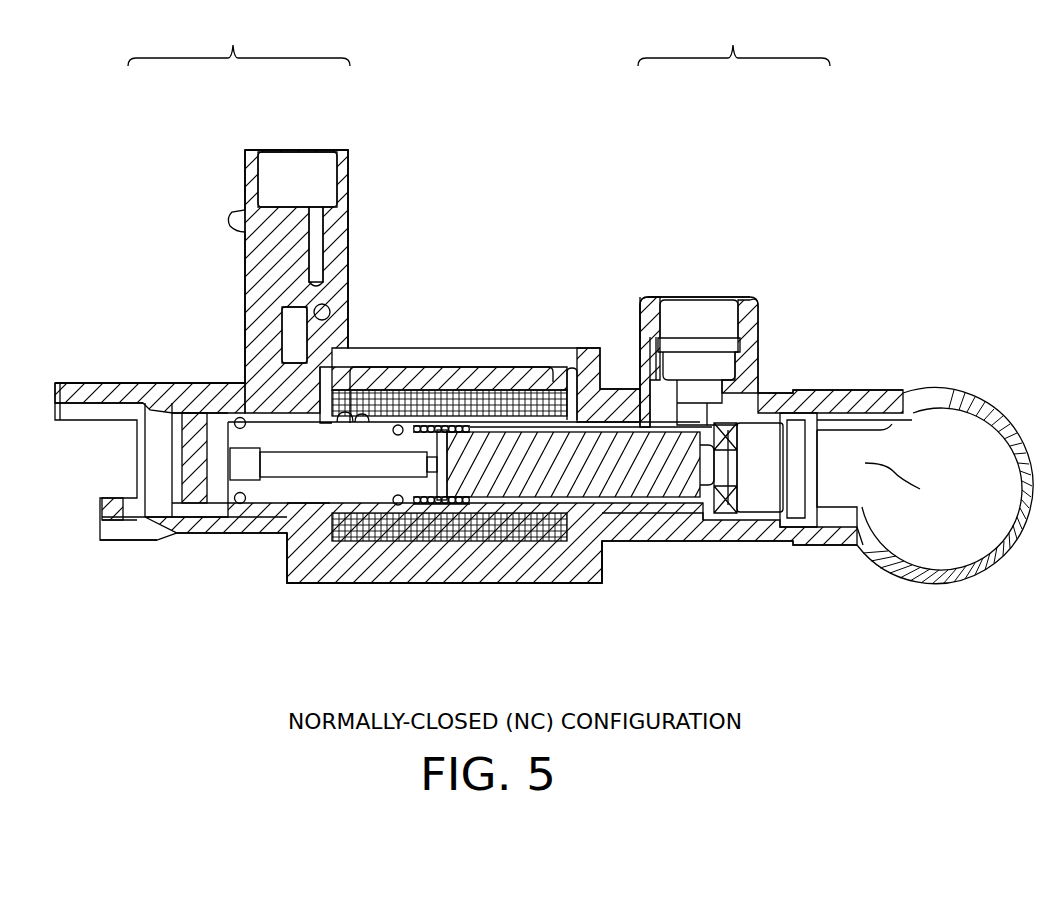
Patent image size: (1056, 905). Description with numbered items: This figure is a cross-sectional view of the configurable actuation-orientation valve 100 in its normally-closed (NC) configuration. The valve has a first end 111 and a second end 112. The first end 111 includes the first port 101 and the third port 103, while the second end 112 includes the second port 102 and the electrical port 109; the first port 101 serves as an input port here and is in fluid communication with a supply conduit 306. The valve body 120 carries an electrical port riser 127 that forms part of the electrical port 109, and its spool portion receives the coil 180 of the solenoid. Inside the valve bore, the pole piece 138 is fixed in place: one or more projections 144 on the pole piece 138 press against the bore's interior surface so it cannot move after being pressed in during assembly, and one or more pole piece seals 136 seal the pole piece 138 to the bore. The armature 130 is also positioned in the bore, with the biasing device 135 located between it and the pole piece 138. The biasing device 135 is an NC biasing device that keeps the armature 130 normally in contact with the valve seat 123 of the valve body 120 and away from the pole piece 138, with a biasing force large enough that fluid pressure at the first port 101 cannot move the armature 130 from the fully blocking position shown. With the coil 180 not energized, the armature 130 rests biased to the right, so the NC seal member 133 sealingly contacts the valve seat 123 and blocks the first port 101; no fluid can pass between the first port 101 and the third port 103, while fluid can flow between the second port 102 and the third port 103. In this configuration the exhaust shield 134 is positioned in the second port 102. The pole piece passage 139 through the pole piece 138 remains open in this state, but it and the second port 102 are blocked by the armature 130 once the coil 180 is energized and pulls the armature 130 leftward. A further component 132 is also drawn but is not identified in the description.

The configurable actuation-orientation valve 100 is at (248, 662).
The first port 101 is at (916, 482).
The second port 102 is at (110, 470).
The third port 103 is at (690, 312).
The electrical port 109 is at (300, 170).
The first end 111 is at (734, 153).
The second end 112 is at (239, 196).
The valve body 120 is at (745, 527).
The valve seat 123 is at (710, 515).
The electrical port riser 127 is at (290, 325).
The armature 130 is at (652, 490).
The housing 132 is at (612, 527).
The NC seal member 133 is at (700, 467).
The exhaust shield 134 is at (450, 462).
The biasing device 135 is at (447, 490).
The pole piece seals 136 is at (240, 500).
The pole piece 138 is at (352, 493).
The pole piece passage 139 is at (290, 465).
The projections 144 is at (362, 418).
The coil 180 is at (537, 545).
The supply conduit 306 is at (985, 577).